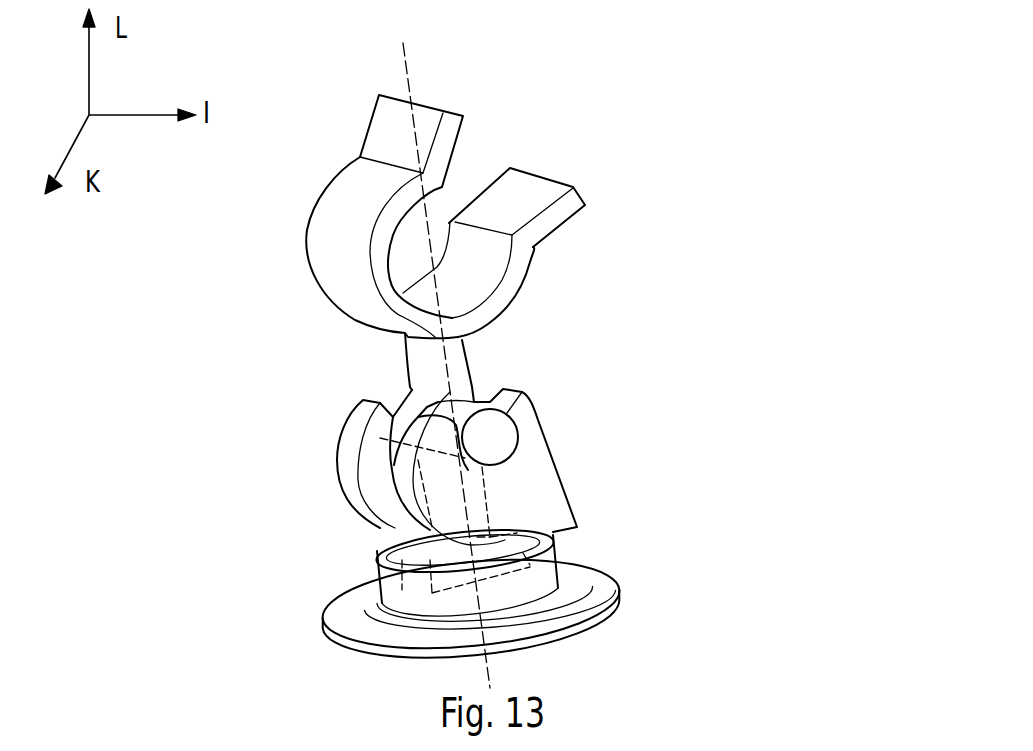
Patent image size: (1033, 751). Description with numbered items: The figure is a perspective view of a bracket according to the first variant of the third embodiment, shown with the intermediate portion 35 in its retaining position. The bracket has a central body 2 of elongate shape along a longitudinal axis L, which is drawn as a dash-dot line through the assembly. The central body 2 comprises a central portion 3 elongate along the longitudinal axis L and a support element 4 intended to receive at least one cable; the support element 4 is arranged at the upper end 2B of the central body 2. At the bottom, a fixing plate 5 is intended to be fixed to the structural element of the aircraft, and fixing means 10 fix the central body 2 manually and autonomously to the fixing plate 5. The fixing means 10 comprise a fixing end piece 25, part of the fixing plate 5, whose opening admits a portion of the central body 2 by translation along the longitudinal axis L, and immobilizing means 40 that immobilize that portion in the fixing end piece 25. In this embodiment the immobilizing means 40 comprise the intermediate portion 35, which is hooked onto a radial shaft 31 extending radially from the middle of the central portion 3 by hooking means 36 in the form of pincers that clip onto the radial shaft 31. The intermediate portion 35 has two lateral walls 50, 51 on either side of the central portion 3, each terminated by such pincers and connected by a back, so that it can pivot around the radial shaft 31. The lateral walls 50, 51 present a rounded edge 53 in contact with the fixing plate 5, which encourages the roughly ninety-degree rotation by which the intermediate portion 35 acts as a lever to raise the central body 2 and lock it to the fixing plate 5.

The central body 2 is at (456, 307).
The upper end 2B is at (395, 216).
The central portion 3 is at (403, 350).
The support element 4 is at (347, 265).
The fixing plate 5 is at (357, 650).
The fixing means 10 is at (460, 543).
The fixing end piece 25 is at (612, 602).
The radial shaft 31 is at (500, 440).
The intermediate portion 35 is at (420, 522).
The hooking means 36 is at (530, 412).
The immobilizing means 40 is at (590, 438).
The lateral wall 50 is at (340, 512).
The lateral wall 51 is at (347, 472).
The rounded edge 53 is at (348, 430).
The longitudinal axis L is at (407, 63).